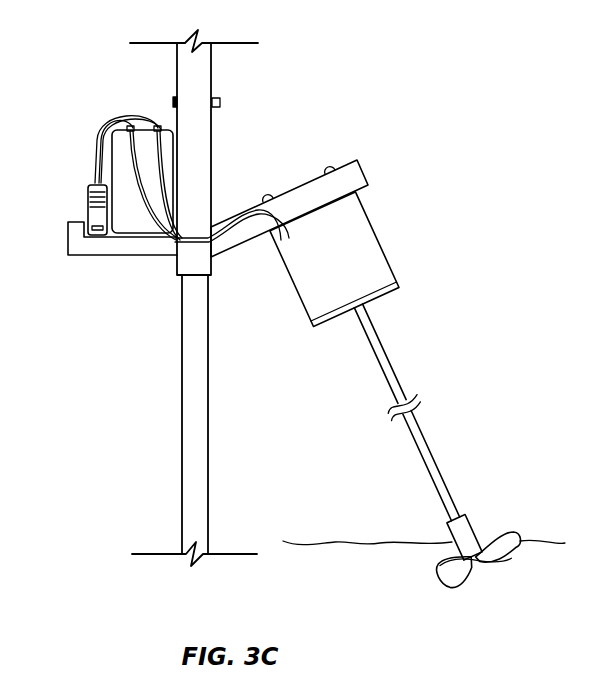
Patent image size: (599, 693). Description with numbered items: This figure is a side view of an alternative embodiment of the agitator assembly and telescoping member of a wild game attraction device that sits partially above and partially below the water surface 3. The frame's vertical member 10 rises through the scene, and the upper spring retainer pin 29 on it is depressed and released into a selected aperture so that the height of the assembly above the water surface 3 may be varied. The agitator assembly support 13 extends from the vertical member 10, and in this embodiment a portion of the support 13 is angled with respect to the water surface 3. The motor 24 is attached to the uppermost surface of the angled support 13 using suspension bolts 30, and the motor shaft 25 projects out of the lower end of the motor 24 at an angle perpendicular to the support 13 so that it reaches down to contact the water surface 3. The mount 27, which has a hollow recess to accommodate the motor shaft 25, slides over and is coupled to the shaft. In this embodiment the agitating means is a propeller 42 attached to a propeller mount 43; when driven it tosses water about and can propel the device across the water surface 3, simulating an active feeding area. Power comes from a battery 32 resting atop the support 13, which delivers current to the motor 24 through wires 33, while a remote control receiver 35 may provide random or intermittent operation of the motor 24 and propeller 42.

The water surface 3 is at (336, 542).
The vertical member 10 is at (181, 396).
The agitator assembly support 13 is at (68, 240).
The motor 24 is at (334, 259).
The motor shaft 25 is at (407, 412).
The mount 27 is at (428, 85).
The upper spring retainer pin 29 is at (220, 103).
The suspension bolts 30 is at (266, 192).
The battery 32 is at (100, 137).
The wires 33 is at (172, 243).
The remote control receiver 35 is at (88, 190).
The propeller 42 is at (480, 559).
The propeller mount 43 is at (464, 538).